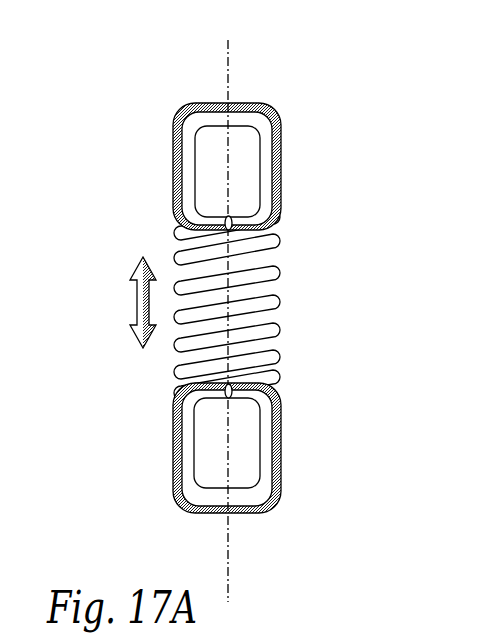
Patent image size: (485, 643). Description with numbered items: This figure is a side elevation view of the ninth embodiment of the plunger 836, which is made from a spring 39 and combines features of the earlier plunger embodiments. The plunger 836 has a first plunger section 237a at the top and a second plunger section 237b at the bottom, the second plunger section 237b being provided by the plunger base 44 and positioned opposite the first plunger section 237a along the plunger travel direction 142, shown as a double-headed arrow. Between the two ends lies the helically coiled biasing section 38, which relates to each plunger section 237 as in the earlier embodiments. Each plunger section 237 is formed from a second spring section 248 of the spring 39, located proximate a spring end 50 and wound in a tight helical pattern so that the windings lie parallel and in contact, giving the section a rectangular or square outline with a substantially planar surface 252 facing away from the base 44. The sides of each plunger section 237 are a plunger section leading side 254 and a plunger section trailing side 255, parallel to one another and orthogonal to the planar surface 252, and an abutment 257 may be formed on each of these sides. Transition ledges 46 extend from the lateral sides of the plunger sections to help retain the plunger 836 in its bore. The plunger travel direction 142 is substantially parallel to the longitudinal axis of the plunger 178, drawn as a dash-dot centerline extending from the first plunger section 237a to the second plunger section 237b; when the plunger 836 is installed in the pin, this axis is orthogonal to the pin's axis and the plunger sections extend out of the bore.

The ninth embodiment of the plunger 836 is at (279, 83).
The plunger section 237 is at (192, 111).
The first plunger section 237a is at (285, 131).
The second plunger section 237b is at (284, 435).
The planar surface 252 is at (240, 103).
The second spring section 248 is at (263, 123).
The plunger section trailing side 255 is at (284, 165).
The abutment 257 is at (174, 165).
The plunger section leading side 254 is at (172, 192).
The transition ledge 46 is at (271, 223).
The spring end 50 is at (228, 307).
The spring 39 is at (281, 275).
The biasing section 38 is at (281, 303).
The plunger base 44 is at (175, 385).
The plunger travel direction 142 is at (132, 302).
The longitudinal axis of the plunger 178 is at (231, 578).